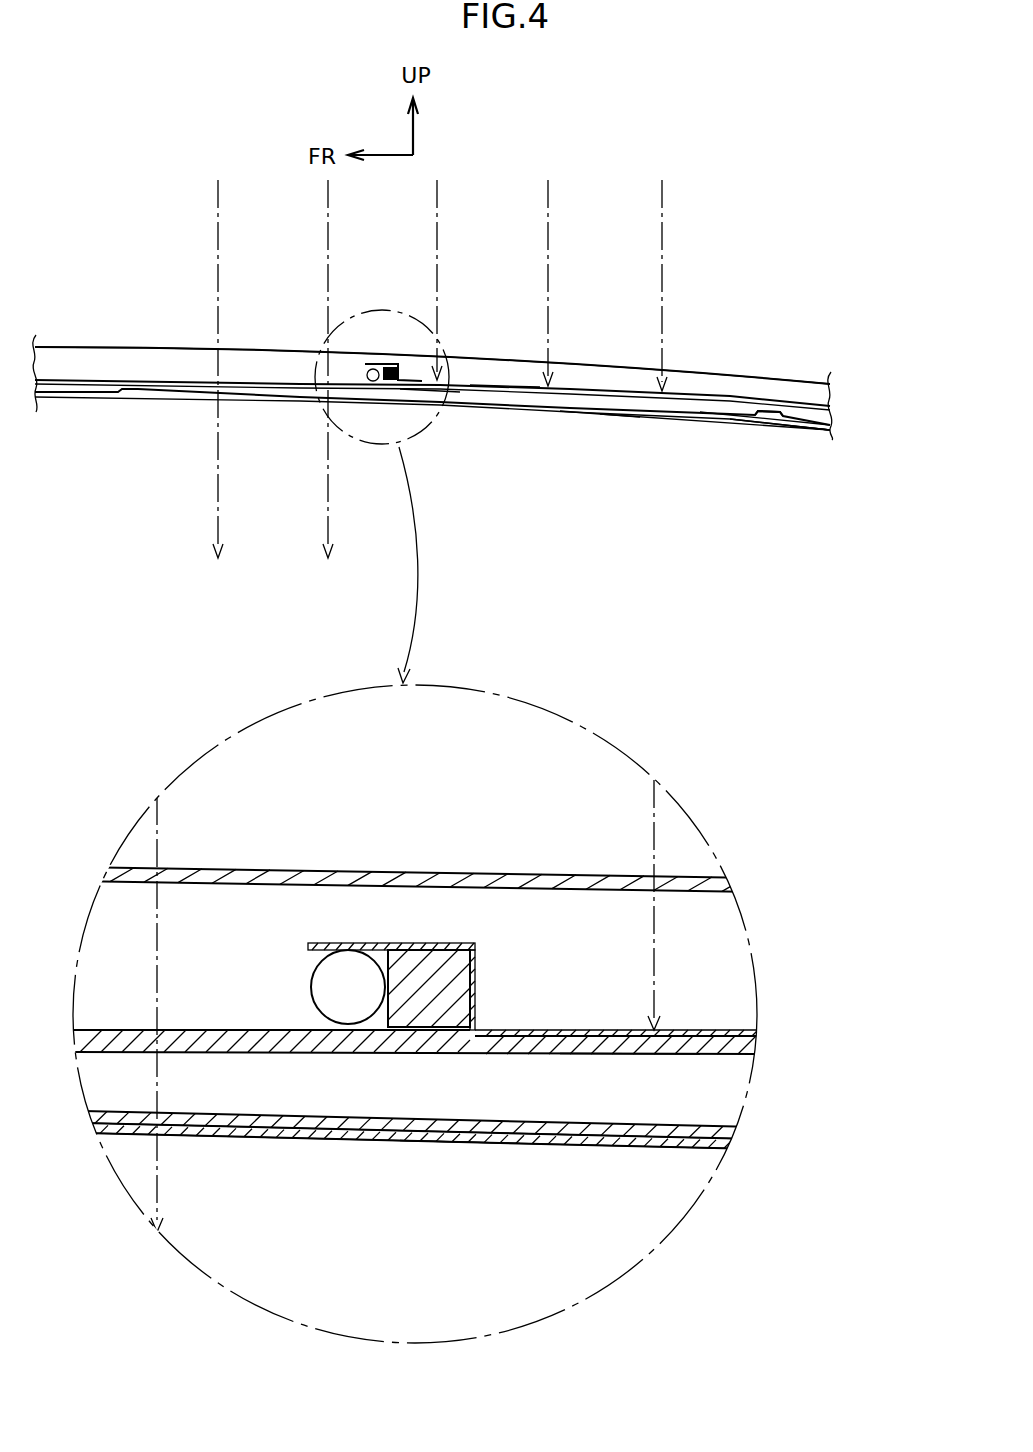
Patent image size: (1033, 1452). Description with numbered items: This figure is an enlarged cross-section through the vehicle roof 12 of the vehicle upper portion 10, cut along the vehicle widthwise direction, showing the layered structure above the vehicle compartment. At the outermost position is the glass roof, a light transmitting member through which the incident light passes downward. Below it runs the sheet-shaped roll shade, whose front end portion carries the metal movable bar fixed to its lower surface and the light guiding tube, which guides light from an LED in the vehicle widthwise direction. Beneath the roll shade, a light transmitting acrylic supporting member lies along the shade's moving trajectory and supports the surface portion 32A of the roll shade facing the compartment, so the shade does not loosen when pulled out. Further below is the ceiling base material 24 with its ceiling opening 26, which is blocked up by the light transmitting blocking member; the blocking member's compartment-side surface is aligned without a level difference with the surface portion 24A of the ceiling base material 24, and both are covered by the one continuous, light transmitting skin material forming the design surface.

The vehicle upper portion 10 is at (736, 330).
The vehicle roof 12 is at (733, 498).
The ceiling base material 24 is at (793, 430).
The surface portion of the ceiling base material 24A is at (811, 434).
The ceiling opening 26 is at (756, 423).
The surface portion of the roll shade 32A is at (605, 1054).